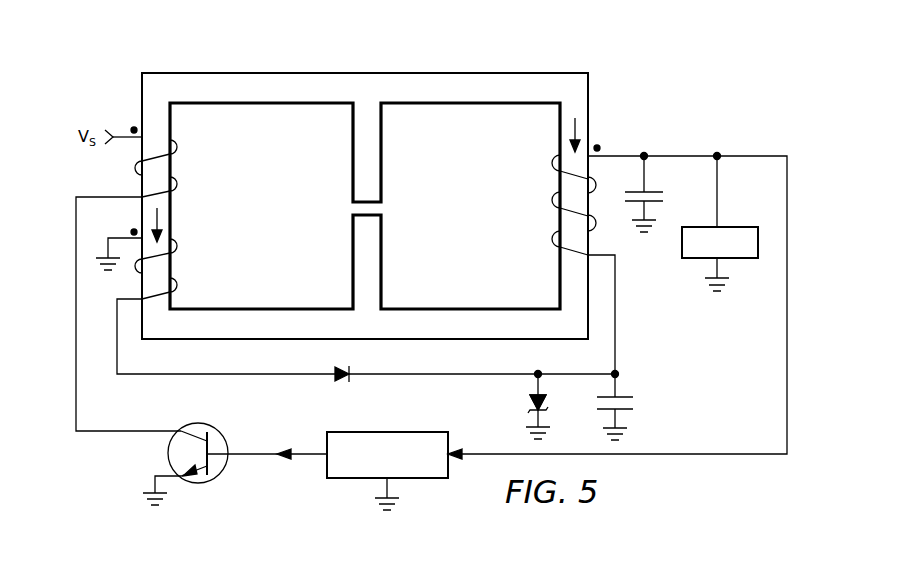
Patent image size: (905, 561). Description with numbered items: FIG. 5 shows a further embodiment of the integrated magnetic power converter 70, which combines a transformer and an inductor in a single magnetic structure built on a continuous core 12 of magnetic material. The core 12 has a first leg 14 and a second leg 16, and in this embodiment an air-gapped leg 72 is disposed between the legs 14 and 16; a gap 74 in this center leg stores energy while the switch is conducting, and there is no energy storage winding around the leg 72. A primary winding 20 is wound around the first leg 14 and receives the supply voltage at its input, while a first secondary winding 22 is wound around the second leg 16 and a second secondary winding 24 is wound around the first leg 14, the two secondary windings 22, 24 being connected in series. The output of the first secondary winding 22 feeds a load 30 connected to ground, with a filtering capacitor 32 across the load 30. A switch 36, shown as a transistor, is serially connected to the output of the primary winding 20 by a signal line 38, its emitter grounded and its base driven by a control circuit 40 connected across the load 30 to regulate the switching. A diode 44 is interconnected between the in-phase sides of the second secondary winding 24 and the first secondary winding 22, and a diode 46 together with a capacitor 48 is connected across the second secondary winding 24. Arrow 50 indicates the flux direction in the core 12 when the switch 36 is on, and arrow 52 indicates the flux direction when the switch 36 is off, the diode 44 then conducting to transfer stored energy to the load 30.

The core 12 is at (425, 80).
The first leg 14 is at (160, 119).
The second leg 16 is at (577, 283).
The primary winding 20 is at (177, 184).
The first secondary winding 22 is at (558, 199).
The second secondary winding 24 is at (177, 266).
The load 30 is at (745, 227).
The filtering capacitor 32 is at (648, 192).
The switch 36 is at (218, 442).
The signal line 38 is at (78, 410).
The control circuit 40 is at (434, 484).
The diode 44 is at (350, 382).
The diode 46 is at (530, 403).
The capacitor 48 is at (628, 398).
The arrow 50 is at (582, 139).
The arrow 52 is at (164, 216).
The power converter 70 is at (630, 88).
The air-gapped leg 72 is at (372, 160).
The gap 74 is at (355, 213).